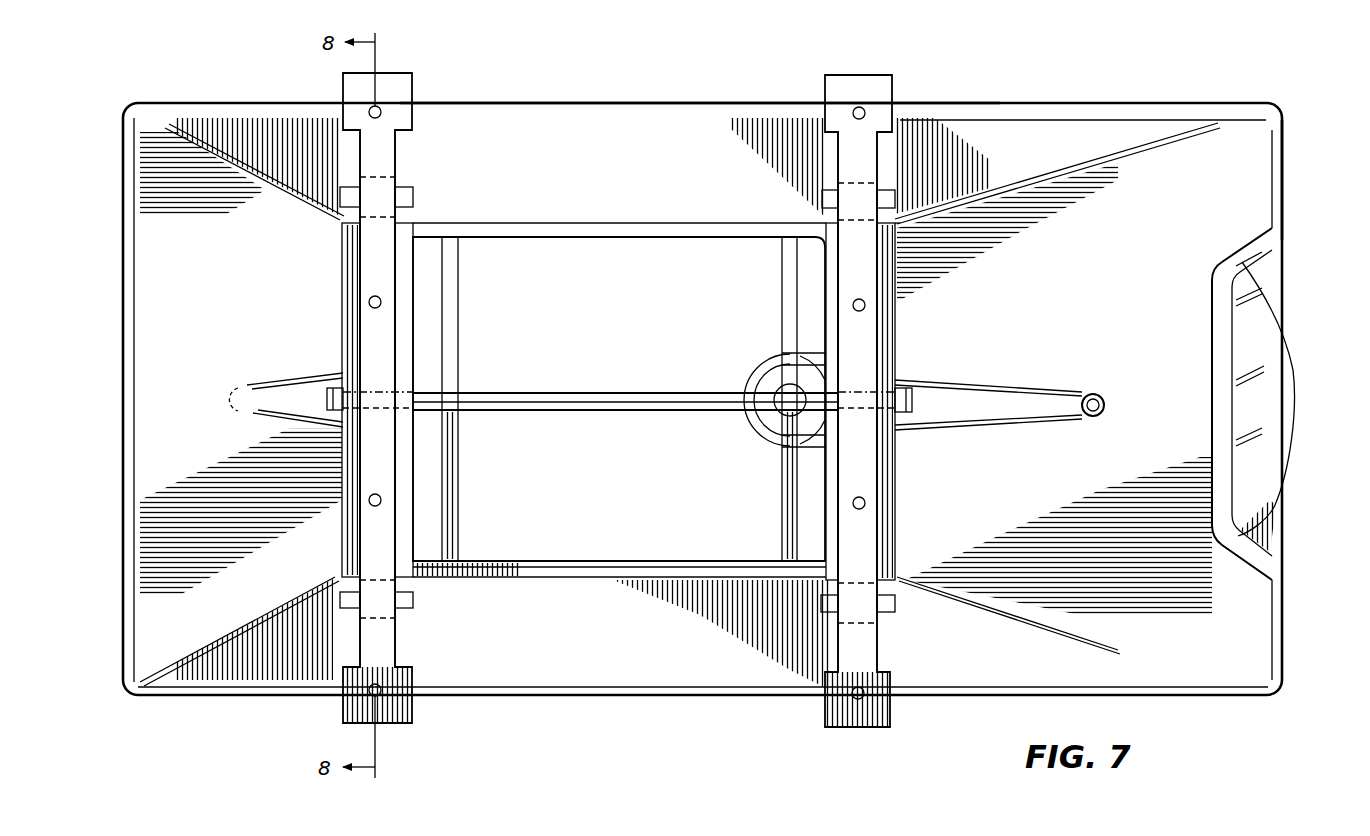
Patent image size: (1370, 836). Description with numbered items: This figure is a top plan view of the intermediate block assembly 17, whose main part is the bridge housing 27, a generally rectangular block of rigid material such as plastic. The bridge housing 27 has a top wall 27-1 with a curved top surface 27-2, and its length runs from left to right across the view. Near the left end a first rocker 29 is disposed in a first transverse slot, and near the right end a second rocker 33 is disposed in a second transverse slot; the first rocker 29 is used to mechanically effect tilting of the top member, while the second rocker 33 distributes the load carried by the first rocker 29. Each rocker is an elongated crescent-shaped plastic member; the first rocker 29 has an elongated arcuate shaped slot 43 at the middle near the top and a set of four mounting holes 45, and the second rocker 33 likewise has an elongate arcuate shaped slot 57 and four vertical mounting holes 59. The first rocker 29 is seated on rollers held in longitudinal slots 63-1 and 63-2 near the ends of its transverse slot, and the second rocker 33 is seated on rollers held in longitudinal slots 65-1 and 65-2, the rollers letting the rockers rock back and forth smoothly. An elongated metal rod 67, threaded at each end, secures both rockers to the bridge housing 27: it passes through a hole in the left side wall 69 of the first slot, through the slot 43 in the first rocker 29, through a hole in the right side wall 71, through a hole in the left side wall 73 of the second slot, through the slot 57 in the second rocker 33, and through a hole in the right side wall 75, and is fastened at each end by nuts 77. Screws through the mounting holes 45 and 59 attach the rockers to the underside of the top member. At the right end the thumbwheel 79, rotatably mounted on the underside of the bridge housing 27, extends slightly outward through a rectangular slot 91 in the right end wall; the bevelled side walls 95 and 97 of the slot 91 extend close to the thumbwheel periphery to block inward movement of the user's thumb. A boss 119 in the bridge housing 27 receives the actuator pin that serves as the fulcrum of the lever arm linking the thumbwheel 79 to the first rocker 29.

The intermediate block assembly 17 is at (600, 702).
The bridge housing 27 is at (1182, 700).
The top wall 27-1 is at (1070, 126).
The curved top surface 27-2 is at (1243, 200).
The first rocker 29 is at (389, 162).
The second rocker 33 is at (873, 151).
The elongated arcuate shaped slot 43 is at (398, 394).
The mounting holes 45 is at (368, 113).
The elongate arcuate shaped slot 57 is at (850, 392).
The vertical mounting holes 59 is at (855, 108).
The longitudinal slot 63-1 is at (412, 192).
The longitudinal slot 63-2 is at (410, 612).
The longitudinal slot 65-1 is at (892, 612).
The longitudinal slot 65-2 is at (822, 197).
The elongated metal rod 67 is at (604, 409).
The left side wall 69 is at (352, 340).
The right side wall 71 is at (455, 344).
The left side wall 73 is at (826, 302).
The right side wall 75 is at (896, 334).
The nuts 77 is at (336, 390).
The thumbwheel 79 is at (1265, 355).
The rectangular slot 91 is at (1264, 259).
The side wall 95 is at (1276, 286).
The side wall 97 is at (1256, 546).
The boss 119 is at (760, 385).